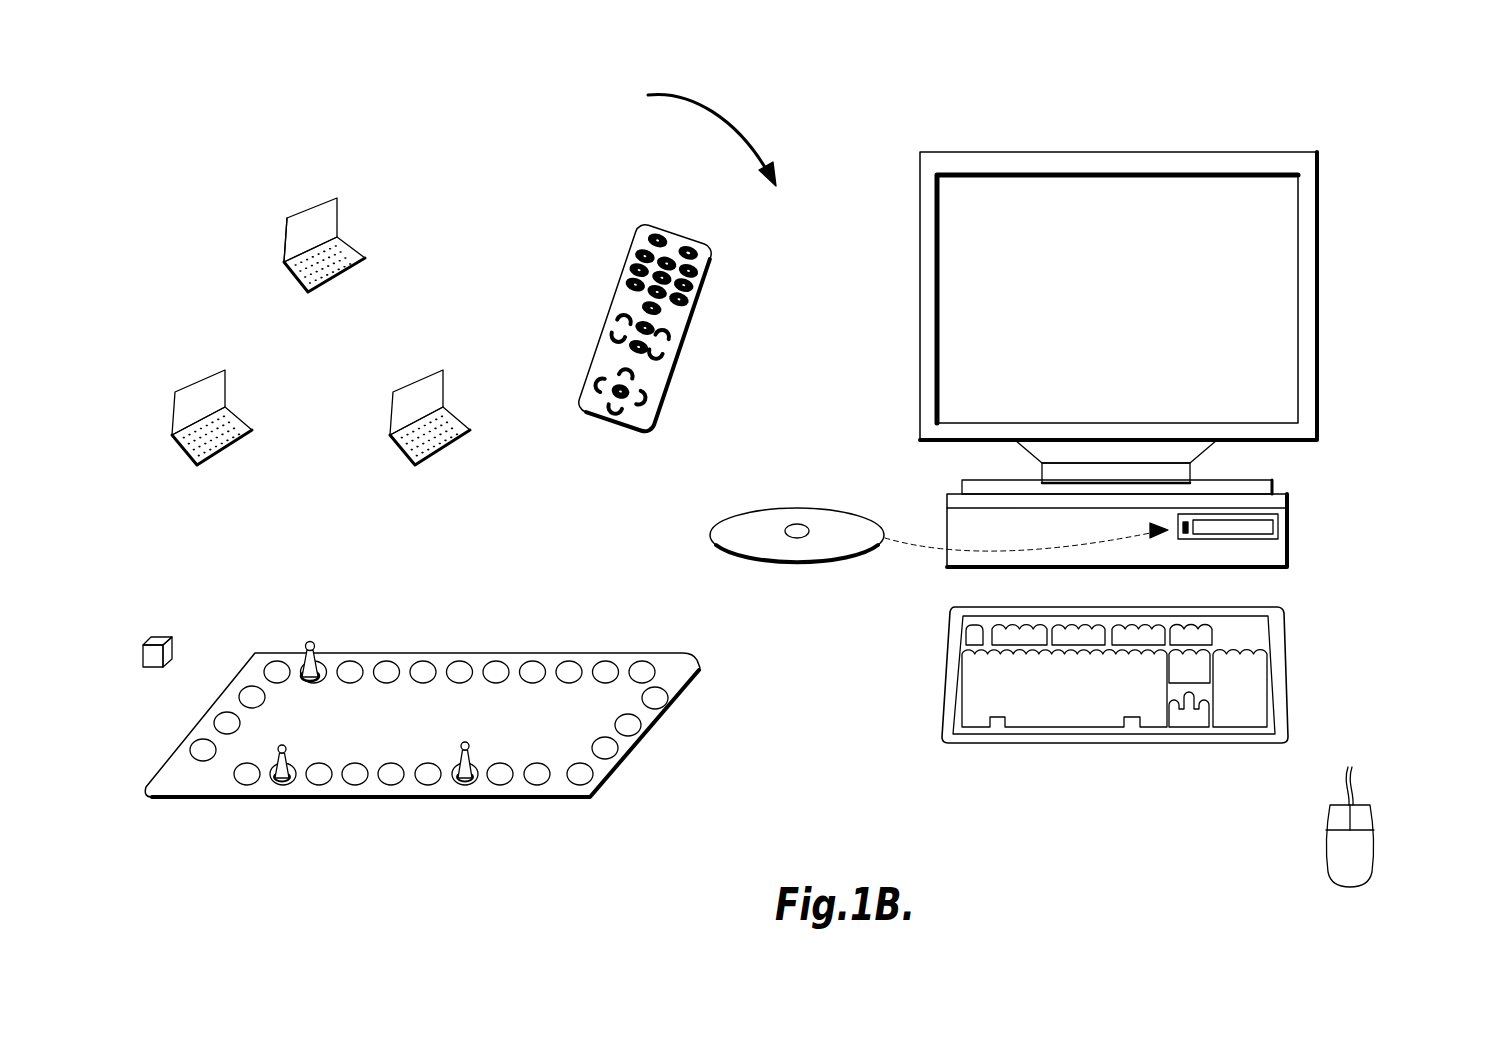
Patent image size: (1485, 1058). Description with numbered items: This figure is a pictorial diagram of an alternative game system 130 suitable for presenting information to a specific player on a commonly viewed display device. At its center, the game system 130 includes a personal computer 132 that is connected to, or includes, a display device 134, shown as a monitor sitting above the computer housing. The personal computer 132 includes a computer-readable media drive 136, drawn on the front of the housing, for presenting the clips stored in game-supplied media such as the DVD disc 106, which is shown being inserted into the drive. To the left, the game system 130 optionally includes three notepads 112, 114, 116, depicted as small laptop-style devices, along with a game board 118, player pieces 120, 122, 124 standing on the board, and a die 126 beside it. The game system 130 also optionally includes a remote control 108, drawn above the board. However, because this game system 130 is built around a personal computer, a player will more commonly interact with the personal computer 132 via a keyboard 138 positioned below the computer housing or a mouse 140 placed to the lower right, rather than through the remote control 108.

The DVD disc 106 is at (822, 509).
The remote control 108 is at (693, 315).
The notepad 112 is at (322, 199).
The notepad 114 is at (203, 372).
The notepad 116 is at (421, 372).
The game board 118 is at (583, 653).
The player piece 120 is at (313, 642).
The player piece 122 is at (281, 745).
The player piece 124 is at (468, 741).
The die 126 is at (174, 636).
The game system 130 is at (691, 135).
The personal computer 132 is at (1164, 359).
The display device 134 is at (1318, 256).
The computer-readable media drive 136 is at (1278, 526).
The keyboard 138 is at (1278, 614).
The mouse 140 is at (1362, 804).